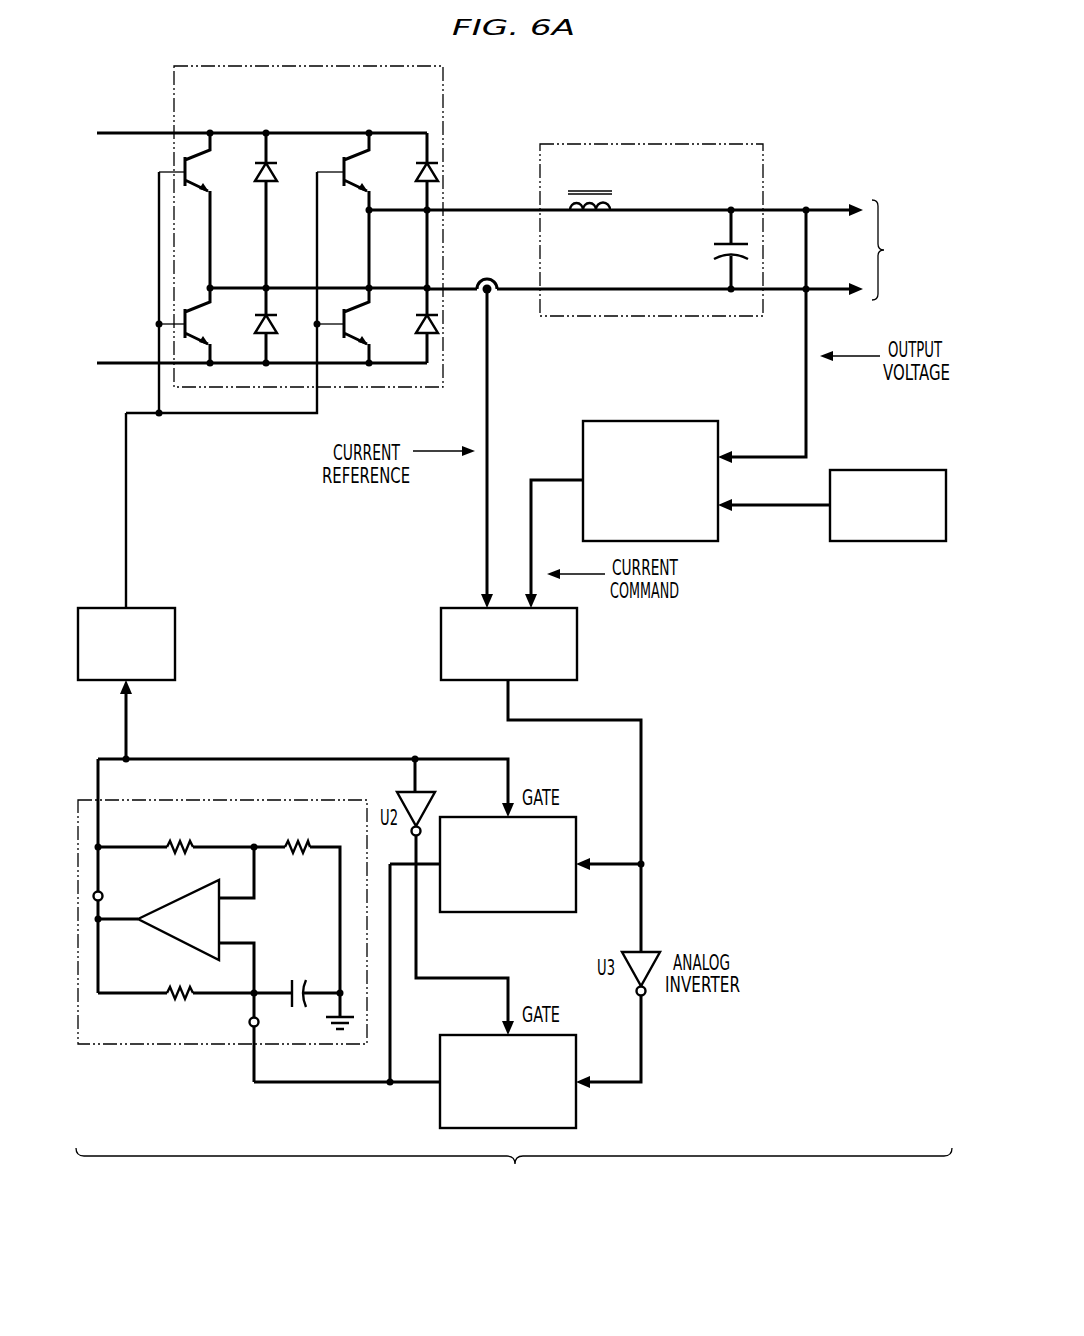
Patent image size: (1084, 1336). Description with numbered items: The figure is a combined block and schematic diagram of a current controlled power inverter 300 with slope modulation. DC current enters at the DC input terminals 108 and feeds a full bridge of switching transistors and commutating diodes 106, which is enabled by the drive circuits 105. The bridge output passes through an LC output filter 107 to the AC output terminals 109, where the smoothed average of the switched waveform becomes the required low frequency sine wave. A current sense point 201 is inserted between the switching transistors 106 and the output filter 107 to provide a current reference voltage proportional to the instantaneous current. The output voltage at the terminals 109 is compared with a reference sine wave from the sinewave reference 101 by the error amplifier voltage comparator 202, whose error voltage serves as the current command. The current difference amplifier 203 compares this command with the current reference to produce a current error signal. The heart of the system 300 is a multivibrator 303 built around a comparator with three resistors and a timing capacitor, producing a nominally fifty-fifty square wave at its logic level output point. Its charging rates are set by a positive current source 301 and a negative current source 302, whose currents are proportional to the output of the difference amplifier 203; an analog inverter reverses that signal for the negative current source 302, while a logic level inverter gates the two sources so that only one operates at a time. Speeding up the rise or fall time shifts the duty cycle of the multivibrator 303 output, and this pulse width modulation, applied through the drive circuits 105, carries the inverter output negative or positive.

The sinewave reference 101 is at (883, 469).
The drive circuits 105 is at (176, 644).
The switching transistors and commutating diodes 106 is at (174, 97).
The LC output filter 107 is at (640, 144).
The DC input terminals 108 is at (118, 285).
The AC output terminals 109 is at (936, 285).
The current sense point 201 is at (485, 295).
The error amplifier voltage comparator 202 is at (647, 419).
The current difference amplifier 203 is at (441, 648).
The power inverter 300 is at (514, 1171).
The positive current source 301 is at (508, 912).
The negative current source 302 is at (440, 1098).
The multivibrator 303 is at (138, 1044).